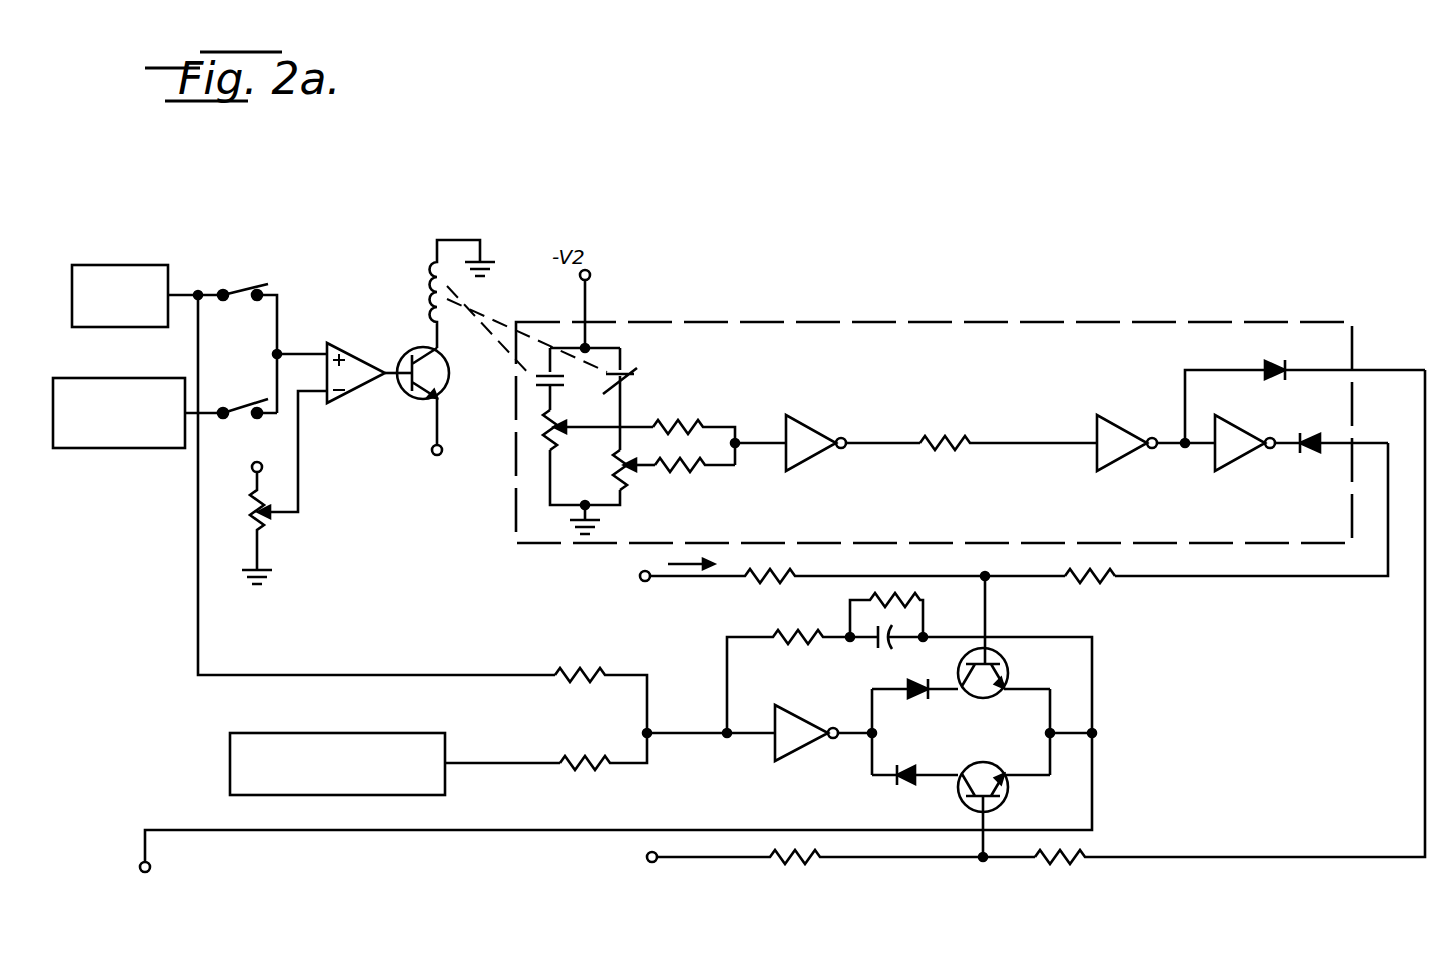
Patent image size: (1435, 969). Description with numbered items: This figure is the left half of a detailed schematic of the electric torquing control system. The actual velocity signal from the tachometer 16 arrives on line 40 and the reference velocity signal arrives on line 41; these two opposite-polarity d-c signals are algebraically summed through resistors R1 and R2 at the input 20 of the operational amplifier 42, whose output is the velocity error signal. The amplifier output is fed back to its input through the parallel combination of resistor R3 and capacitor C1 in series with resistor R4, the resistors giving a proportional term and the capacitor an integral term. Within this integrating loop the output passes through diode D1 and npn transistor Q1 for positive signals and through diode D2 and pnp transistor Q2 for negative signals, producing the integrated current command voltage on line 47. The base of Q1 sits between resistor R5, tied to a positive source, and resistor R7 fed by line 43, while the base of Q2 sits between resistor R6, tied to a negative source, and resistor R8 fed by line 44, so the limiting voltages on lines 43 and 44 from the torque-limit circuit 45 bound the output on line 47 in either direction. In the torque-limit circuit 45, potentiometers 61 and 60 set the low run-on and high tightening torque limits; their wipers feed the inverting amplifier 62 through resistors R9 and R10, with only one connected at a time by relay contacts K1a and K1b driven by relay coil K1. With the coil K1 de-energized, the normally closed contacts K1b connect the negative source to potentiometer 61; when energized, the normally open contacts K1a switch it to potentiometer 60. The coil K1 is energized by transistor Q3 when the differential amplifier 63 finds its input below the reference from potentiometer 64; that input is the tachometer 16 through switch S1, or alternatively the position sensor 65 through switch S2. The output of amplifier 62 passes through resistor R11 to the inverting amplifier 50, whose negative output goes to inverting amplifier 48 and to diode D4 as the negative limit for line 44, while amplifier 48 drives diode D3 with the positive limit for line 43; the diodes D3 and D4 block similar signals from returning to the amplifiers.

The tachometer 16 is at (97, 265).
The position sensor 65 is at (106, 378).
The switch S1 is at (238, 292).
The switch S2 is at (238, 410).
The differential amplifier 63 is at (340, 404).
The potentiometer 64 is at (270, 522).
The transistor Q3 is at (406, 356).
The relay coil K1 is at (428, 286).
The normally open relay contacts K1a is at (538, 384).
The normally closed relay contacts K1b is at (638, 373).
The potentiometer 60 is at (546, 437).
The potentiometer 61 is at (618, 465).
The resistor R9 is at (676, 428).
The resistor R10 is at (688, 470).
The inverting amplifier 62 is at (812, 466).
The resistor R11 is at (942, 448).
The inverting amplifier 50 is at (1122, 462).
The inverting amplifier 48 is at (1233, 465).
The diode D3 is at (1298, 436).
The diode D4 is at (1264, 367).
The torque-limit circuit 45 is at (790, 324).
The line 43 is at (1228, 577).
The resistor R7 is at (1090, 577).
The resistor R5 is at (758, 579).
The resistor R3 is at (896, 599).
The capacitor C1 is at (878, 646).
The resistor R4 is at (796, 640).
The summing junction 20 is at (651, 732).
The line 40 is at (428, 675).
The resistor R1 is at (583, 674).
The line 41 is at (505, 763).
The resistor R2 is at (584, 762).
The operational amplifier 42 is at (772, 752).
The diode D1 is at (916, 697).
The diode D2 is at (906, 780).
The npn transistor Q1 is at (1009, 665).
The pnp transistor Q2 is at (1009, 787).
The line 47 is at (1092, 706).
The resistor R6 is at (802, 860).
The resistor R8 is at (1086, 860).
The line 44 is at (1230, 856).